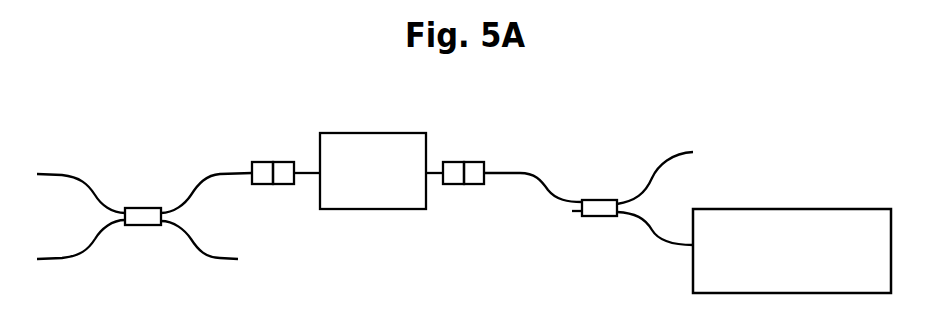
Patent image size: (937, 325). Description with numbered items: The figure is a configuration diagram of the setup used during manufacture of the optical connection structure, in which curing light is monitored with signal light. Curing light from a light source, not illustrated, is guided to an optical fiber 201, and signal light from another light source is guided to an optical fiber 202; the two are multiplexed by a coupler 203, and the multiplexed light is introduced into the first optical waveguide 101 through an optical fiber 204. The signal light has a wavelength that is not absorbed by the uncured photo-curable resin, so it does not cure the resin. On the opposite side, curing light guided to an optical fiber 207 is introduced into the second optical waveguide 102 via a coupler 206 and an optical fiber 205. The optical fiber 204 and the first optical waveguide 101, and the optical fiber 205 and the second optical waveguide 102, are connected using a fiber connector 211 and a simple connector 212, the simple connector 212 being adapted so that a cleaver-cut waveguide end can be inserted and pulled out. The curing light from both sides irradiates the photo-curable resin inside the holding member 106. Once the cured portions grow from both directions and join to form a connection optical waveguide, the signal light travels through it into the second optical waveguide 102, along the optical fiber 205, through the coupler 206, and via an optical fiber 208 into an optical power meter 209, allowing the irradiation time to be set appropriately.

The first optical waveguide 101 is at (307, 175).
The second optical waveguide 102 is at (433, 175).
The holding member 106 is at (372, 133).
The optical fiber 201 is at (59, 173).
The optical fiber 202 is at (51, 262).
The coupler 203 is at (143, 206).
The optical fiber 204 is at (200, 175).
The optical fiber 205 is at (516, 173).
The coupler 206 is at (599, 199).
The optical fiber 207 is at (678, 152).
The optical fiber 208 is at (658, 248).
The optical power meter 209 is at (773, 208).
The fiber connector 211 is at (257, 187).
The simple connector 212 is at (283, 162).